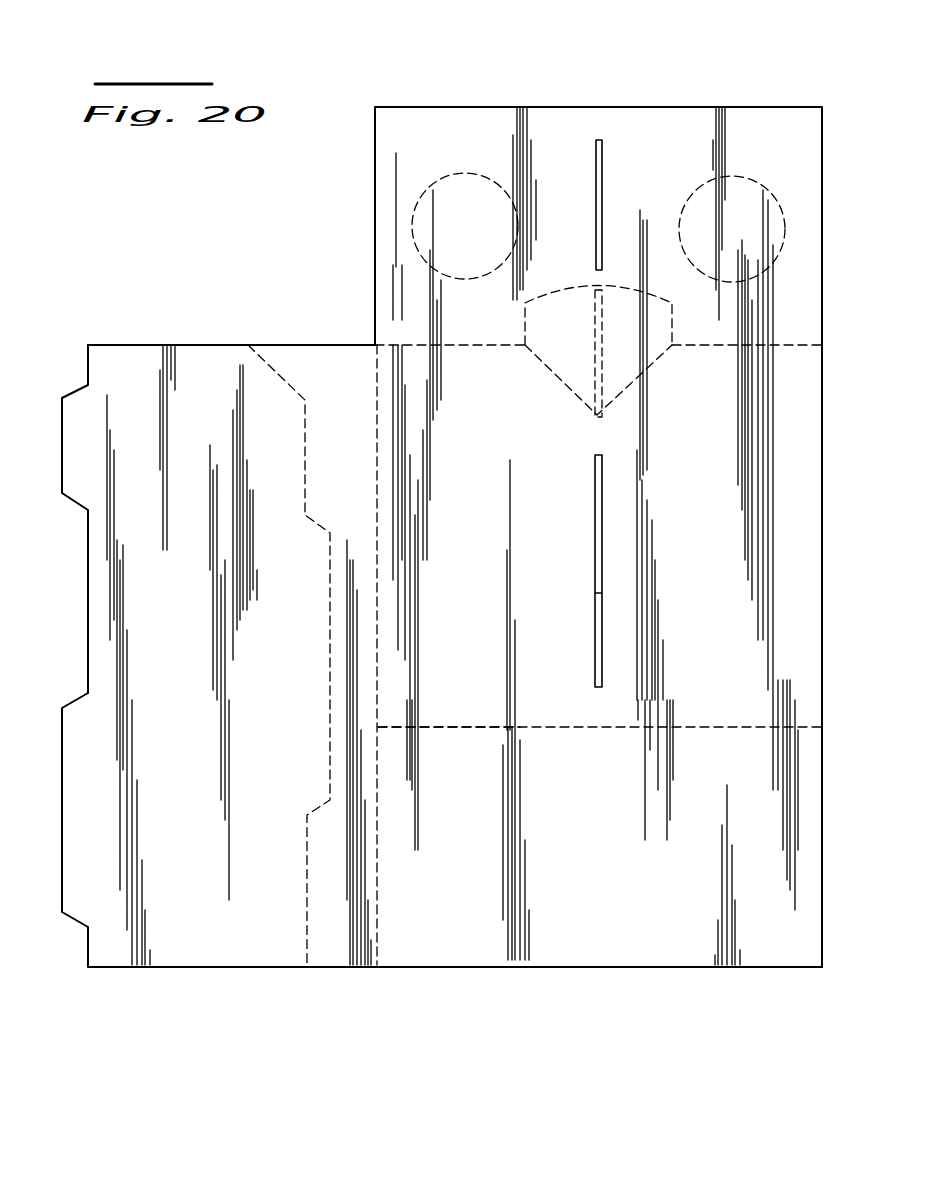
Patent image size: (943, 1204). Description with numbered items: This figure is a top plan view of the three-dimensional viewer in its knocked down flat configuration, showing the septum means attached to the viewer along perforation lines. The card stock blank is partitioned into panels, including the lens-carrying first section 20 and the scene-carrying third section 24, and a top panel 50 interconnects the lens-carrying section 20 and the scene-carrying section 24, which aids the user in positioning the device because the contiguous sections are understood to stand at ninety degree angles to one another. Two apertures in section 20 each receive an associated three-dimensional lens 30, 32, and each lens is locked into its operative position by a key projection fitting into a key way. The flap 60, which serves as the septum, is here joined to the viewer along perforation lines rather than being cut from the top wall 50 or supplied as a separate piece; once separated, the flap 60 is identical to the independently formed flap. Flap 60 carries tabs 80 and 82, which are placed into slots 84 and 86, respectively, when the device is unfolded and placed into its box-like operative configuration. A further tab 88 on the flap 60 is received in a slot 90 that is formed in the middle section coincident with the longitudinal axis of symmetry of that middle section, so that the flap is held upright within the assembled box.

The first section 20 is at (627, 118).
The third section 24 is at (622, 955).
The 3-D lens 30 is at (443, 178).
The 3-D lens 32 is at (730, 195).
The top panel 50 is at (415, 308).
The flap 60 is at (145, 608).
The tab 80 is at (65, 430).
The tab 82 is at (72, 830).
The slot 84 is at (600, 180).
The slot 86 is at (600, 550).
The tab 88 is at (315, 722).
The slot 90 is at (375, 443).